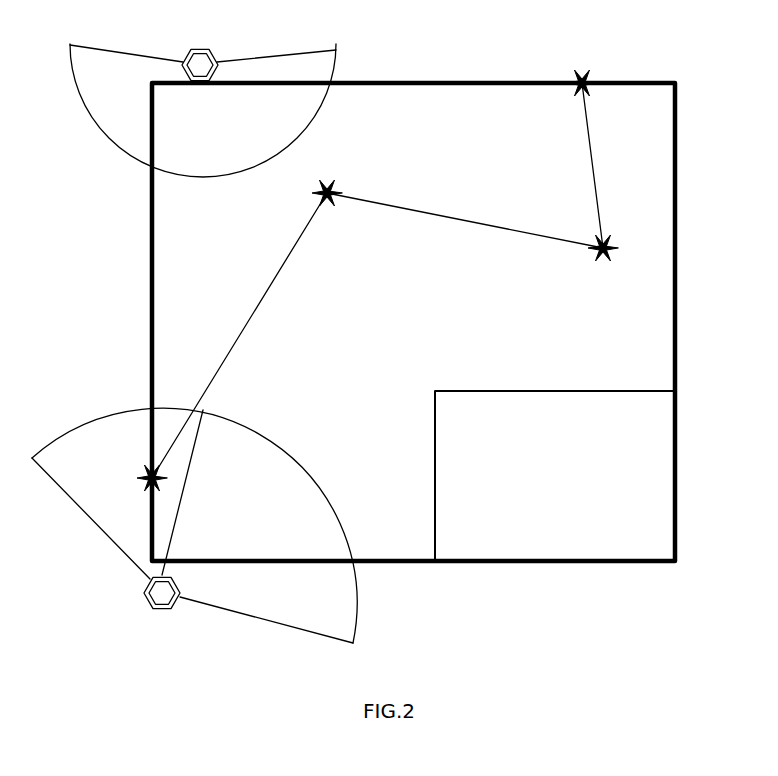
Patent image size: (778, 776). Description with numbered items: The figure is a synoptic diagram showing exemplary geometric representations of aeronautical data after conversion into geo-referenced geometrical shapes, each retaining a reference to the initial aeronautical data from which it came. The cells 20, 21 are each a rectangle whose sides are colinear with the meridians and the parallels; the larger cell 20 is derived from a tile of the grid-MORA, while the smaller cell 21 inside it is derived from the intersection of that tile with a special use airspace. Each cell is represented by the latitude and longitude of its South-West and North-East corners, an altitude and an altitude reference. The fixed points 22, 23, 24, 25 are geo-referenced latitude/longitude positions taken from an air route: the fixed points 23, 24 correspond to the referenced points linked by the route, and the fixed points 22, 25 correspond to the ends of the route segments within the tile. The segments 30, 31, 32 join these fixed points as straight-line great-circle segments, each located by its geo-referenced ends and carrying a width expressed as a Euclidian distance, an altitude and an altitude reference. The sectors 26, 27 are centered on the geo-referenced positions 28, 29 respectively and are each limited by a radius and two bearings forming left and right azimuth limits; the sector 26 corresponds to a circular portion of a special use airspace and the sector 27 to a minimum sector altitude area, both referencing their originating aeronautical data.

The cell 20 is at (678, 120).
The cell 21 is at (521, 391).
The fixed point 22 is at (587, 72).
The fixed point 23 is at (607, 262).
The fixed point 24 is at (336, 180).
The fixed point 25 is at (137, 478).
The sector 26 is at (88, 118).
The sector 27 is at (101, 418).
The geo-referenced position 28 is at (213, 50).
The geo-referenced position 29 is at (166, 611).
The segment 30 is at (589, 143).
The segment 31 is at (458, 220).
The segment 32 is at (259, 299).